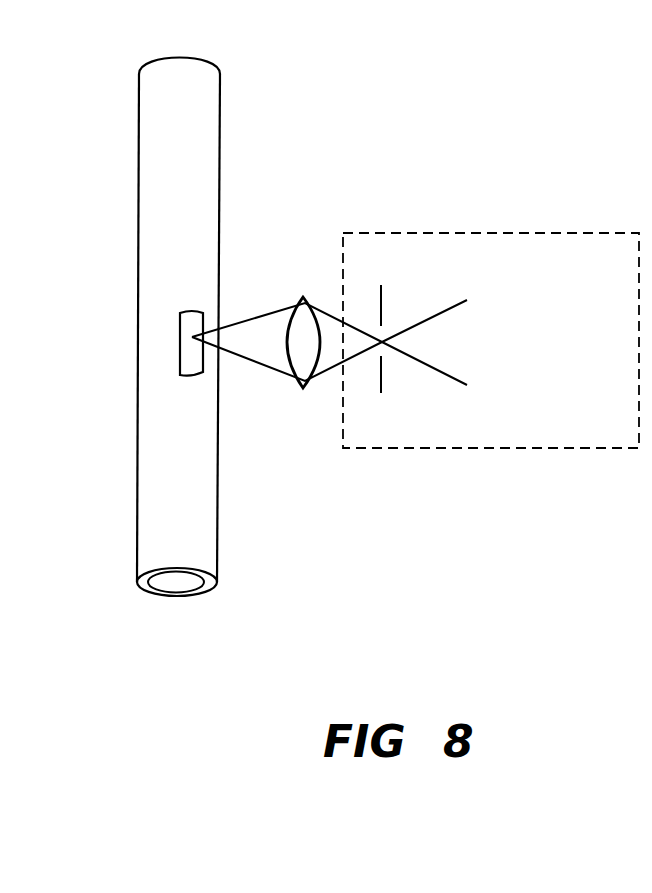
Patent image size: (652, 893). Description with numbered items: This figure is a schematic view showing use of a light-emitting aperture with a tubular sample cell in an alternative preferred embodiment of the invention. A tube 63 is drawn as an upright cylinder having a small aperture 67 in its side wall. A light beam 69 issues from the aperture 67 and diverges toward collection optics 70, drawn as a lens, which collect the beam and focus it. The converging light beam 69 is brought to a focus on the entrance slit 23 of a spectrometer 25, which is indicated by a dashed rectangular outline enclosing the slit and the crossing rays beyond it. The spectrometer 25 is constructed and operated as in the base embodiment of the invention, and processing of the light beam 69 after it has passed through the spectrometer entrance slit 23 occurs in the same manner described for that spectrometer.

The tube 63 is at (148, 460).
The small aperture 67 is at (180, 330).
The light beam 69 is at (262, 352).
The collection optics 70 is at (305, 296).
The entrance slit 23 is at (383, 338).
The spectrometer 25 is at (560, 448).